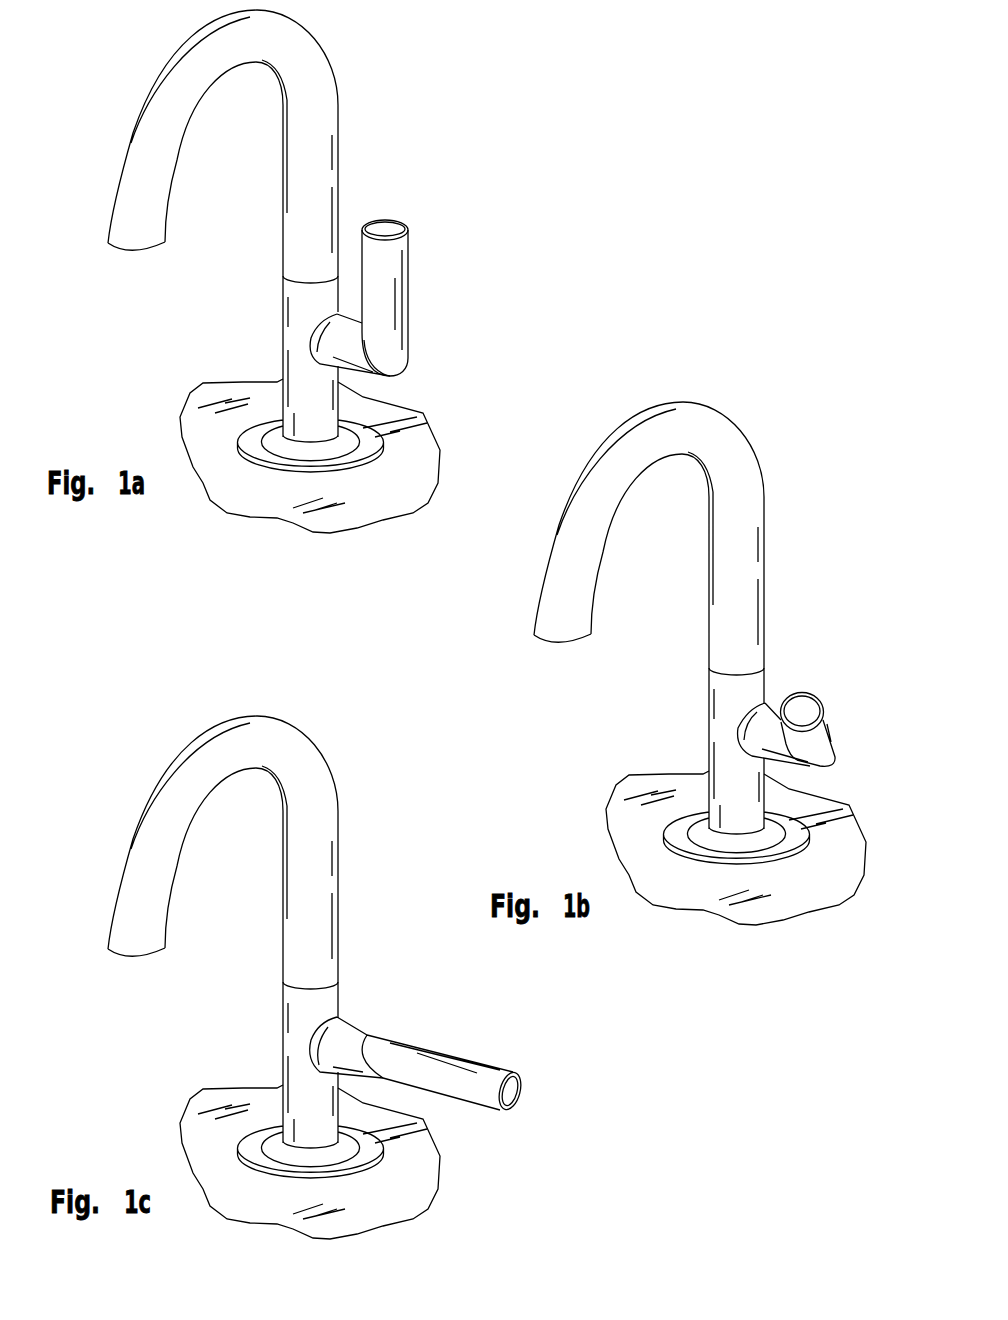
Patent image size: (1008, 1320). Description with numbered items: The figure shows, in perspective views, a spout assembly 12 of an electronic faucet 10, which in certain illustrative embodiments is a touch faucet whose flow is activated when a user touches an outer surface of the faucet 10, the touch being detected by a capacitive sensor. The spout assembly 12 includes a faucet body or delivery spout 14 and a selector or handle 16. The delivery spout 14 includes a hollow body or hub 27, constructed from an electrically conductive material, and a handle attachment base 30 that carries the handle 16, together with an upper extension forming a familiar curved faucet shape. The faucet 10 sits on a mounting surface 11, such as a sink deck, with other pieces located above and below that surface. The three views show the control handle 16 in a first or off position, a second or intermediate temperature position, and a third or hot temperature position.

In FIG. 1A, the electronic faucet 10 is at (315, 241).
In FIG. 1B, the electronic faucet 10 is at (713, 586).
In FIG. 1C, the electronic faucet 10 is at (346, 921).
In FIG. 1A, the mounting surface 11 is at (408, 466).
In FIG. 1B, the mounting surface 11 is at (836, 883).
In FIG. 1C, the mounting surface 11 is at (413, 1172).
In FIG. 1A, the spout assembly 12 is at (227, 283).
In FIG. 1B, the spout assembly 12 is at (653, 676).
In FIG. 1C, the spout assembly 12 is at (225, 990).
In FIG. 1A, the delivery spout 14 is at (345, 180).
In FIG. 1B, the delivery spout 14 is at (772, 568).
In FIG. 1C, the delivery spout 14 is at (348, 880).
In FIG. 1A, the handle 16 is at (420, 281).
In FIG. 1B, the handle 16 is at (822, 688).
In FIG. 1C, the handle 16 is at (533, 1074).
In FIG. 1A, the hub 27 is at (283, 342).
In FIG. 1B, the hub 27 is at (710, 731).
In FIG. 1C, the hub 27 is at (283, 1047).
In FIG. 1A, the handle attachment base 30 is at (360, 376).
In FIG. 1B, the handle attachment base 30 is at (788, 771).
In FIG. 1C, the handle attachment base 30 is at (367, 1025).